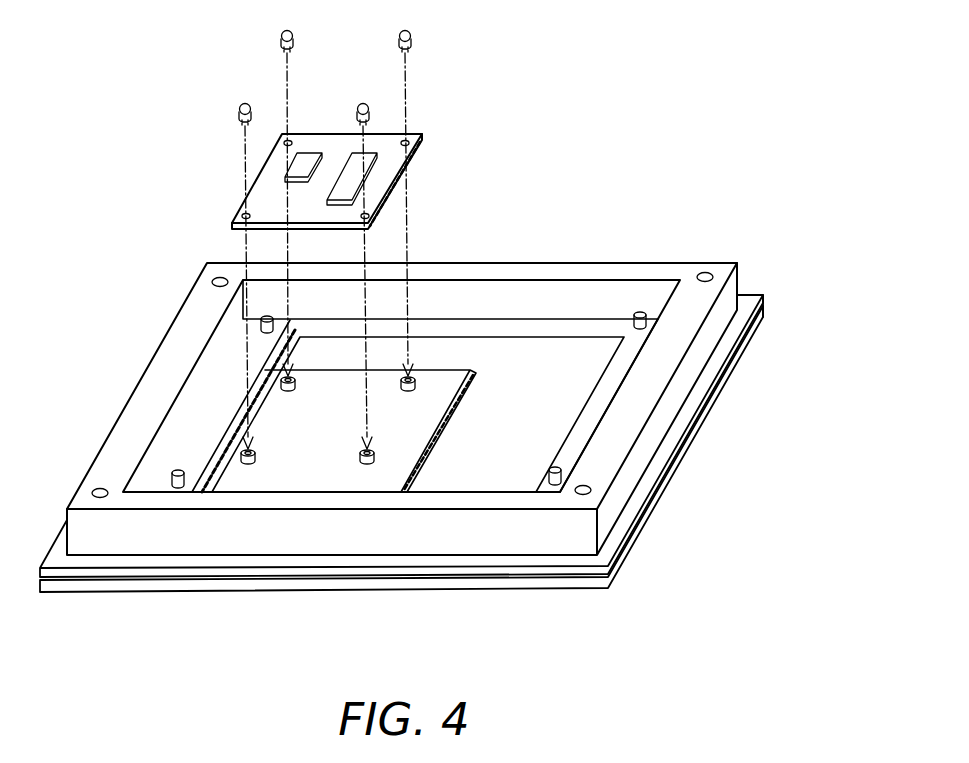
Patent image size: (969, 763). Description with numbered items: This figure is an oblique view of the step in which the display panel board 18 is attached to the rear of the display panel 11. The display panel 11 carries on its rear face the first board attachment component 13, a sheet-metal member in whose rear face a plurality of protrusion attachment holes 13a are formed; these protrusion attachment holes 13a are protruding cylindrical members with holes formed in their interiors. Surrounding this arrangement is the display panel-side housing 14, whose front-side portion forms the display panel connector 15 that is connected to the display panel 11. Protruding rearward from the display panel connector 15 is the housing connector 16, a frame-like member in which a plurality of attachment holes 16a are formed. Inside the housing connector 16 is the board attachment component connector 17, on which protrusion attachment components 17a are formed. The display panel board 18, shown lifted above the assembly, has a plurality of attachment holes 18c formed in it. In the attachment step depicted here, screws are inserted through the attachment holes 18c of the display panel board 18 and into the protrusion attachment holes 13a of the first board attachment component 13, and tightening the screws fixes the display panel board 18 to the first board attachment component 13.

The display panel 11 is at (652, 517).
The first board attachment component 13 is at (452, 455).
The protrusion attachment holes 13a is at (403, 388).
The display panel-side housing 14 is at (777, 273).
The display panel connector 15 is at (754, 294).
The housing connector 16 is at (402, 367).
The attachment holes 16a is at (704, 275).
The board attachment component connector 17 is at (409, 402).
The protrusion attachment components 17a is at (637, 326).
The display panel board 18 is at (315, 234).
The attachment holes 18c is at (246, 213).